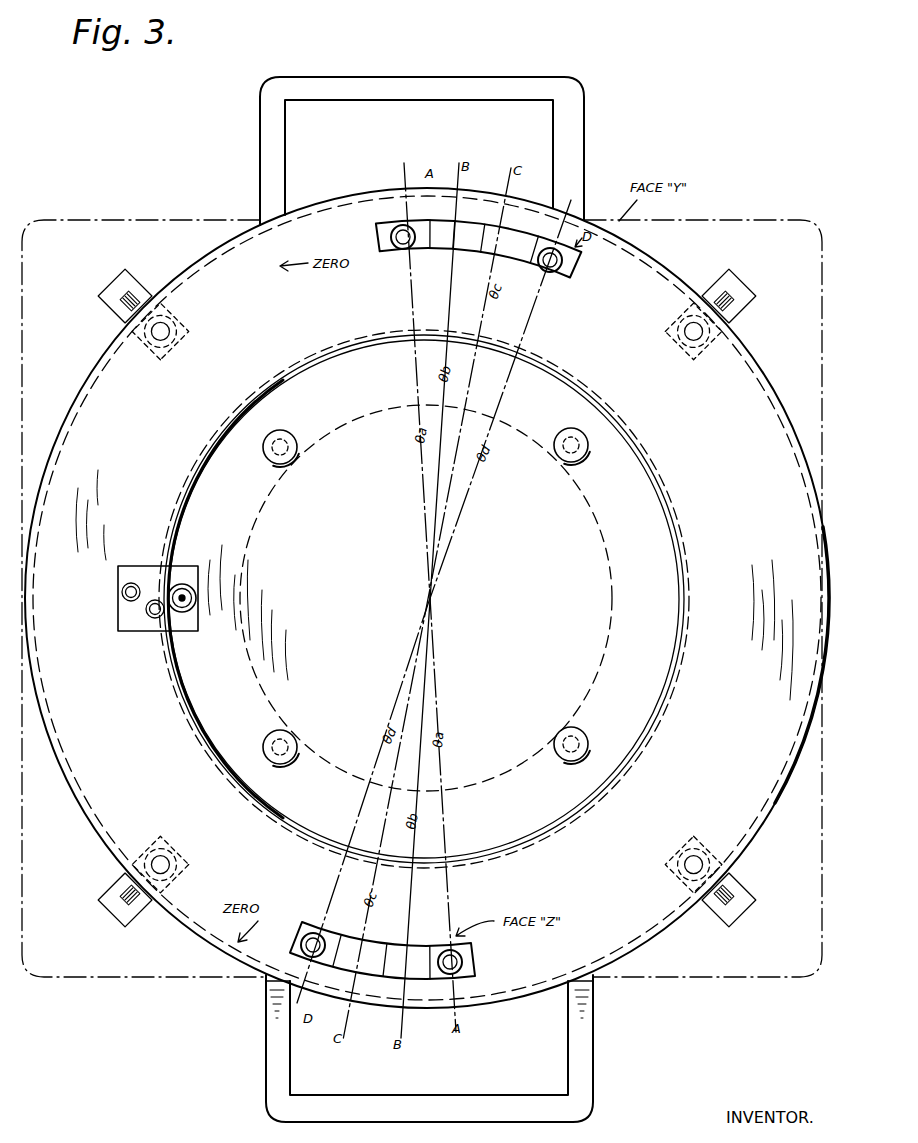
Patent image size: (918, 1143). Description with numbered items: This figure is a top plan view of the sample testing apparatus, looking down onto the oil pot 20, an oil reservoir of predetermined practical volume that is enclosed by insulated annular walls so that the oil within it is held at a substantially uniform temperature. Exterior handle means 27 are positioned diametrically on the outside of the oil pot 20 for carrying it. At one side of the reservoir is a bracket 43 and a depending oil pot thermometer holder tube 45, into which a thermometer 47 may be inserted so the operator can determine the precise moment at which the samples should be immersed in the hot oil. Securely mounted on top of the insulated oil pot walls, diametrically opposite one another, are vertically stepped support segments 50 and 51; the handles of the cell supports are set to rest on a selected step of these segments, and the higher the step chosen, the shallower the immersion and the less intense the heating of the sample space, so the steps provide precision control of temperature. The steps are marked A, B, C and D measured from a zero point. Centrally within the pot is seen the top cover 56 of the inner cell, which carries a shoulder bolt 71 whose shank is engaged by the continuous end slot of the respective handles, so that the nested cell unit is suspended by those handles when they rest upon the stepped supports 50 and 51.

The oil pot 20 is at (762, 378).
The exterior handle means 27 is at (403, 78).
The bracket 43 is at (137, 624).
The oil pot thermometer holder tube 45 is at (190, 628).
The thermometer 47 is at (193, 574).
The vertically stepped support segment 50 is at (416, 944).
The vertically stepped support segment 51 is at (548, 279).
The top cover 56 is at (300, 398).
The shoulder bolt 71 is at (298, 456).